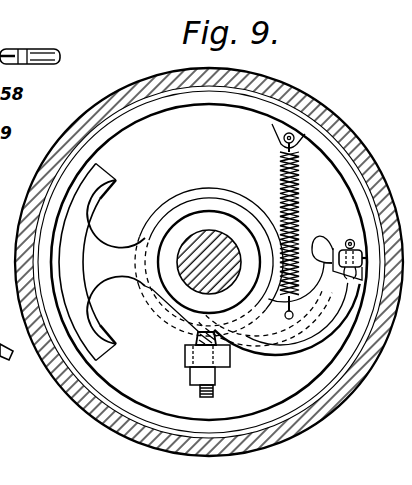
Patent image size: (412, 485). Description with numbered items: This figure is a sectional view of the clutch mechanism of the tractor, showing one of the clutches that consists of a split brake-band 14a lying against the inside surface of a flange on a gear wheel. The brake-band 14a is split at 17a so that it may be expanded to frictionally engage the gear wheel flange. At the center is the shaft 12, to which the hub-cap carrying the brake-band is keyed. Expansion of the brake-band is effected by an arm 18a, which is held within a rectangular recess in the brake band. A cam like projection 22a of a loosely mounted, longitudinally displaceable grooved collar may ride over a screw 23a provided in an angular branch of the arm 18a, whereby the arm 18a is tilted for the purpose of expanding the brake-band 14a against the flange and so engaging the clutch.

The brake-band 14a is at (160, 104).
The shaft 12 is at (212, 240).
The cam like projection 22a is at (190, 193).
The split 17a is at (334, 247).
The arm 18a is at (188, 355).
The screw 23a is at (200, 387).